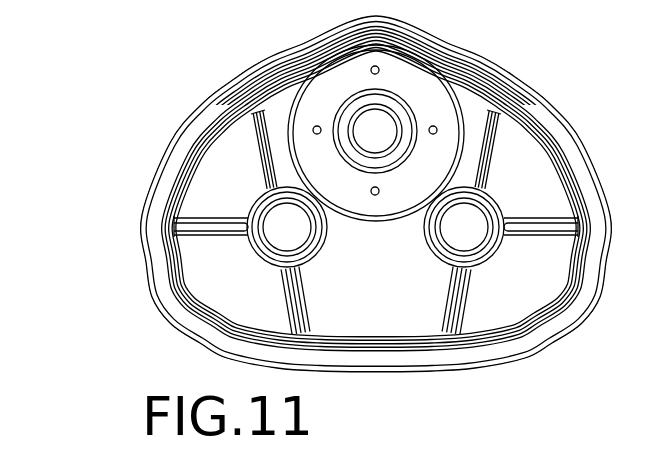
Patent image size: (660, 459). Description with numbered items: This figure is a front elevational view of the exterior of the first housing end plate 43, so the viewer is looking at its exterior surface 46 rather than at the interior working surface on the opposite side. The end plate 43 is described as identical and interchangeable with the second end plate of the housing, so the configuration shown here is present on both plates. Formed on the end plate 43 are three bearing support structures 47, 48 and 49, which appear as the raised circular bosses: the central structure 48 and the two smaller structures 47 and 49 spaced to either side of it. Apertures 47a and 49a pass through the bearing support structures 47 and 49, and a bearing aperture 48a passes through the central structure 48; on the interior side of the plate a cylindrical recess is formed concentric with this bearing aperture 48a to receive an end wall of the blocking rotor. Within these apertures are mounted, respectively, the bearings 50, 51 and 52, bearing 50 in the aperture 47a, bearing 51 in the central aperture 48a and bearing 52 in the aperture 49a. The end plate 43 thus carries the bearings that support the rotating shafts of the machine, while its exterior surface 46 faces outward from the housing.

The end plate 43 is at (540, 348).
The exterior surface 46 is at (325, 303).
The bearing support structure 47 is at (257, 187).
The aperture 47a is at (277, 240).
The bearing support structure 48 is at (368, 157).
The bearing aperture 48a is at (378, 112).
The bearing support structure 49 is at (455, 213).
The aperture 49a is at (458, 233).
The bearing 50 is at (258, 183).
The bearing 51 is at (377, 162).
The bearing 52 is at (490, 247).